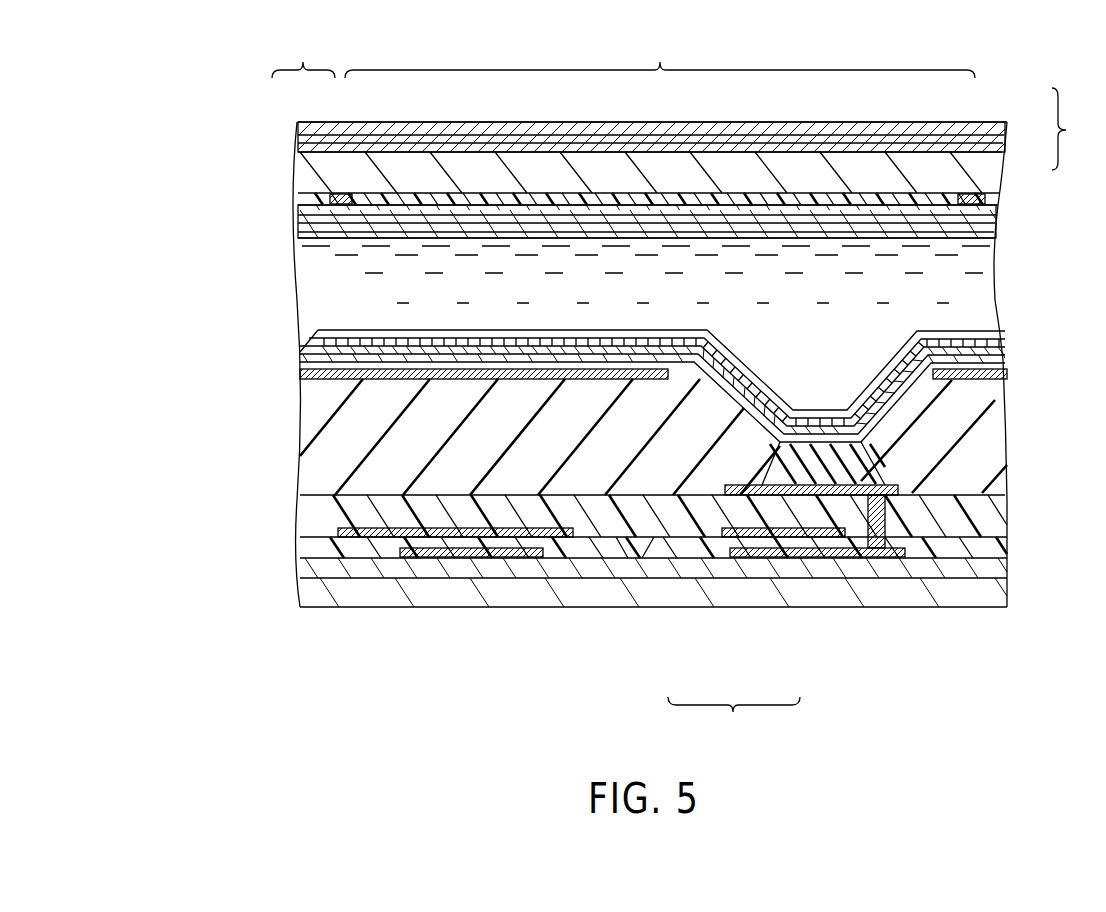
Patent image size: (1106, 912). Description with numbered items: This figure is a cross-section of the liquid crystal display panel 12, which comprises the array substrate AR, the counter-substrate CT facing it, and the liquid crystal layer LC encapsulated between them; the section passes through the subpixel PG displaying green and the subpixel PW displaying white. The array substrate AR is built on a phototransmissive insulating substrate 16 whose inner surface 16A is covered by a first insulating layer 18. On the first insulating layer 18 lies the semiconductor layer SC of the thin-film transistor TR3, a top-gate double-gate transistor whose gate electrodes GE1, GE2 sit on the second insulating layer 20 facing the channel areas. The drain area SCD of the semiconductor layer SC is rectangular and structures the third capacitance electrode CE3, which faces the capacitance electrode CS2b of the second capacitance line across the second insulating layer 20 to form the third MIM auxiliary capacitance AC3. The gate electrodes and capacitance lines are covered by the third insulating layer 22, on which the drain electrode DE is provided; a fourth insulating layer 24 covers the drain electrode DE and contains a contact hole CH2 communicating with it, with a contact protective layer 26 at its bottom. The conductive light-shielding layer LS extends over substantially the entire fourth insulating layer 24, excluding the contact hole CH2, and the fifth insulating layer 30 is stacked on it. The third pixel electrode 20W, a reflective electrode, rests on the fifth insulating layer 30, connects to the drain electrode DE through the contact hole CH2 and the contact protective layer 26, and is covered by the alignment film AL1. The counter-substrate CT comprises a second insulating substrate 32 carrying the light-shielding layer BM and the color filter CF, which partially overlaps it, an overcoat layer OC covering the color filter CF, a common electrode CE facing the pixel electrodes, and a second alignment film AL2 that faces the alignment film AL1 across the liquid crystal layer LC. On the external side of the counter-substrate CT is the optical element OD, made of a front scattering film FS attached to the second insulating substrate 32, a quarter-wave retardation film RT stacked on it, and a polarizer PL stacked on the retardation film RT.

The subpixel displaying green PG is at (303, 52).
The subpixel displaying white PW is at (660, 52).
The light-shielding layer BM is at (343, 193).
The second insulating substrate 32 is at (506, 172).
The color filter CF is at (608, 190).
The polarizer PL is at (990, 128).
The retardation film RT is at (992, 140).
The front scattering film FS is at (992, 150).
The optical element OD is at (1078, 129).
The counter-substrate CT is at (284, 200).
The overcoat layer OC is at (997, 207).
The common electrode CE is at (998, 216).
The second alignment film AL2 is at (996, 247).
The liquid crystal layer LC is at (997, 277).
The third pixel electrode 20W is at (397, 336).
The alignment film AL1 is at (340, 330).
The fifth insulating layer 30 is at (305, 373).
The light-shielding layer LS is at (345, 406).
The fourth insulating layer 24 is at (988, 444).
The contact protective layer 26 is at (988, 468).
The thin-film transistor TR3 is at (395, 512).
The third insulating layer 22 is at (1005, 512).
The second insulating layer 20 is at (1005, 540).
The inner surface 16A is at (316, 578).
The first insulating layer 18 is at (1005, 568).
The insulating substrate 16 is at (330, 600).
The array substrate AR is at (425, 614).
The semiconductor layer SC is at (470, 540).
The gate electrode GE1 is at (497, 623).
The gate electrode GE2 is at (543, 557).
The contact hole CH2 is at (632, 556).
The drain electrode DE is at (672, 527).
The drain area SCD is at (820, 556).
The capacitance electrode CS2b is at (720, 537).
The third capacitance electrode CE3 is at (760, 557).
The third MIM auxiliary capacitance AC3 is at (734, 720).
The liquid crystal display panel 12 is at (925, 614).